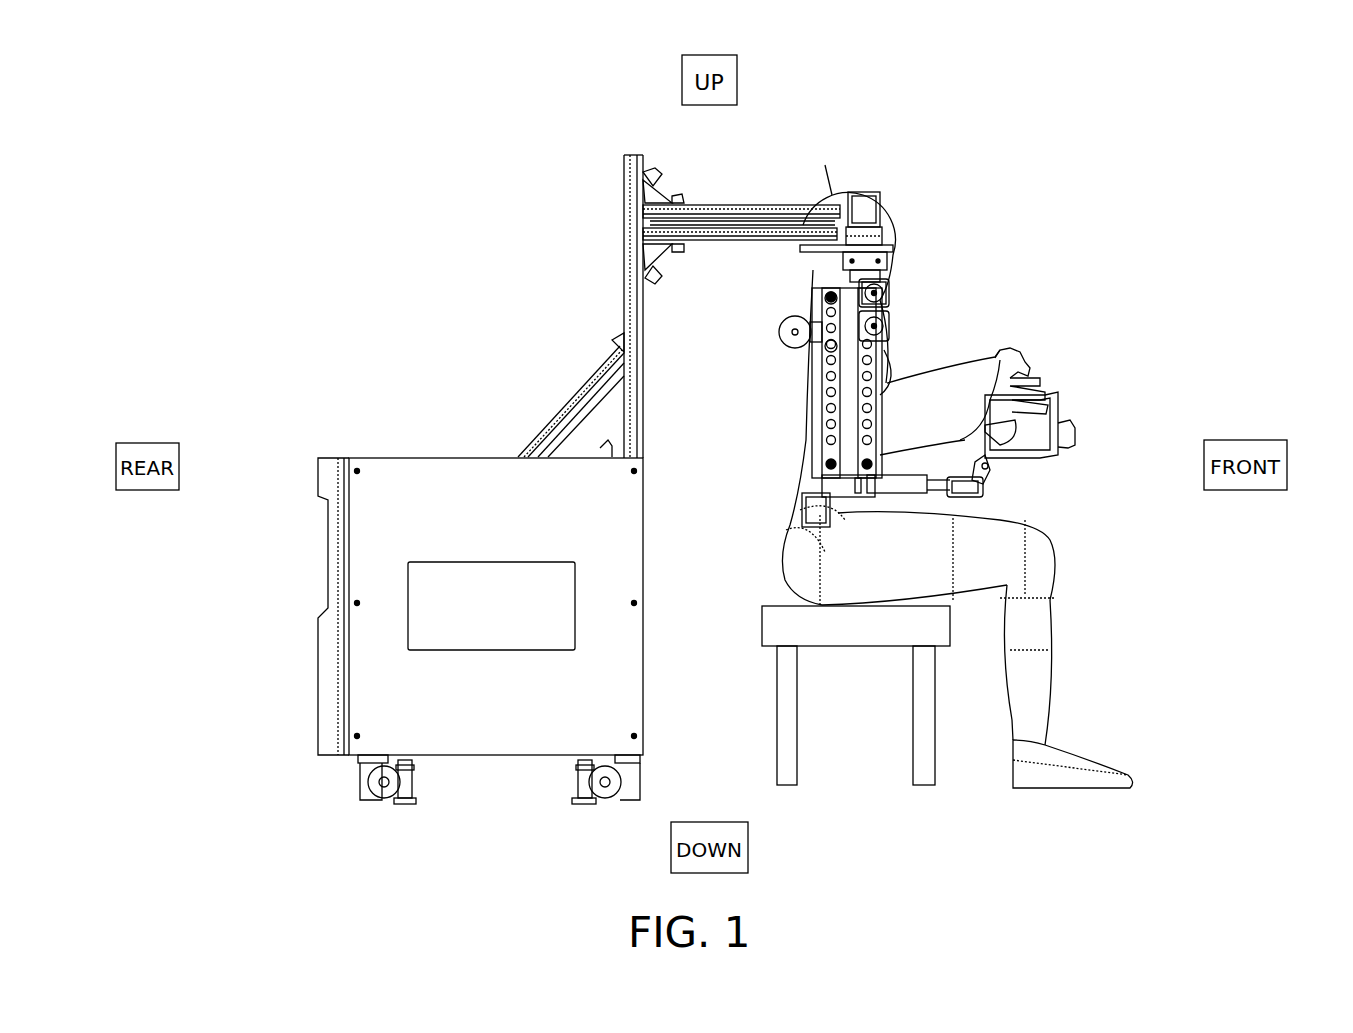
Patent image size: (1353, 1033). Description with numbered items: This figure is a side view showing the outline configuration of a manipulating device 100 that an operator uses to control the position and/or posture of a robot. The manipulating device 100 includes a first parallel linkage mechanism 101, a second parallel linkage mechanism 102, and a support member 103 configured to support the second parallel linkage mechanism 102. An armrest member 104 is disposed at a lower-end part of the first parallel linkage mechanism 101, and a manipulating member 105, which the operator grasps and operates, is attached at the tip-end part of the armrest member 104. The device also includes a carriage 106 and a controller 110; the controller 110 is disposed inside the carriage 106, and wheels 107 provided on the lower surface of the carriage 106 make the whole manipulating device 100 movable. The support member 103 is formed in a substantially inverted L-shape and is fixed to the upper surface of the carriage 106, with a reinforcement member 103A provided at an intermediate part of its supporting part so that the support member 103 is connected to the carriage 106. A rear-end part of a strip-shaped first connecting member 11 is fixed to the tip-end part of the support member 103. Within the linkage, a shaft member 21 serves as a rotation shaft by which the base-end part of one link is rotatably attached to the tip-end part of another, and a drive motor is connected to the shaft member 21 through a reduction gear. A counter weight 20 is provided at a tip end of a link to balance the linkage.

The manipulating device 100 is at (726, 48).
The first connecting member 11 is at (832, 205).
The shaft member 21 is at (885, 290).
The counter weight 20 is at (793, 332).
The first parallel linkage mechanism 101 is at (815, 403).
The second parallel linkage mechanism 102 is at (888, 313).
The support member 103 is at (789, 205).
The reinforcement member 103A is at (558, 417).
The armrest member 104 is at (878, 512).
The manipulating member 105 is at (1058, 401).
The carriage 106 is at (372, 507).
The wheels 107 is at (358, 782).
The controller 110 is at (407, 606).